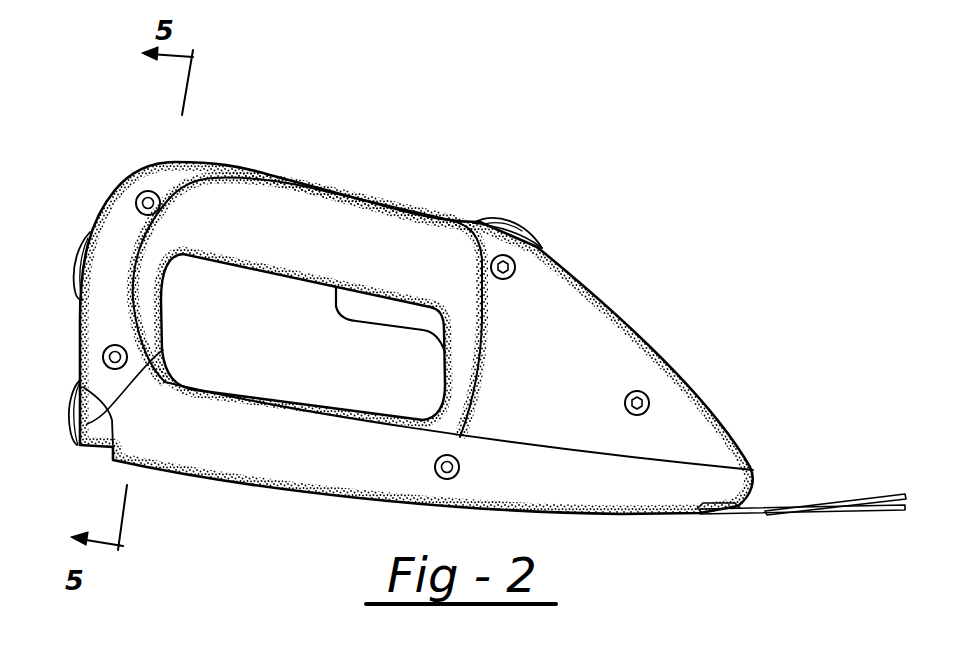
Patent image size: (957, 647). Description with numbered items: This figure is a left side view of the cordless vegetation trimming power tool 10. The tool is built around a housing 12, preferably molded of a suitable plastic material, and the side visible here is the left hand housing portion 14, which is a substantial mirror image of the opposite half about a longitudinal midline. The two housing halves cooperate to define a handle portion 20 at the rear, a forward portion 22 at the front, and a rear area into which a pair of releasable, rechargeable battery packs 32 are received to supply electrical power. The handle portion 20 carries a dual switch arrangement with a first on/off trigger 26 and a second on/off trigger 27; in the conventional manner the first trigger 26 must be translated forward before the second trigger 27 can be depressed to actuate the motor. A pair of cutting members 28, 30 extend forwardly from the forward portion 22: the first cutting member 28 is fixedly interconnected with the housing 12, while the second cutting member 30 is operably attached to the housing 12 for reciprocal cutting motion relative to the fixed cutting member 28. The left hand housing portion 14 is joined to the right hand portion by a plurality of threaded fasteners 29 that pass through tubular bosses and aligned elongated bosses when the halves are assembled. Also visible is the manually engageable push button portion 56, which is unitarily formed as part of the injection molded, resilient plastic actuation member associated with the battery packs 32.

The power tool 10 is at (596, 240).
The housing 12 is at (240, 167).
The left hand housing portion 14 is at (293, 217).
The handle portion 20 is at (125, 251).
The forward portion 22 is at (637, 360).
The first on/off trigger 26 is at (487, 219).
The second on/off trigger 27 is at (391, 318).
The fixed cutting member 28 is at (866, 511).
The threaded fasteners 29 is at (148, 191).
The second cutting member 30 is at (883, 487).
The battery packs 32 is at (163, 350).
The push button portion 56 is at (73, 263).